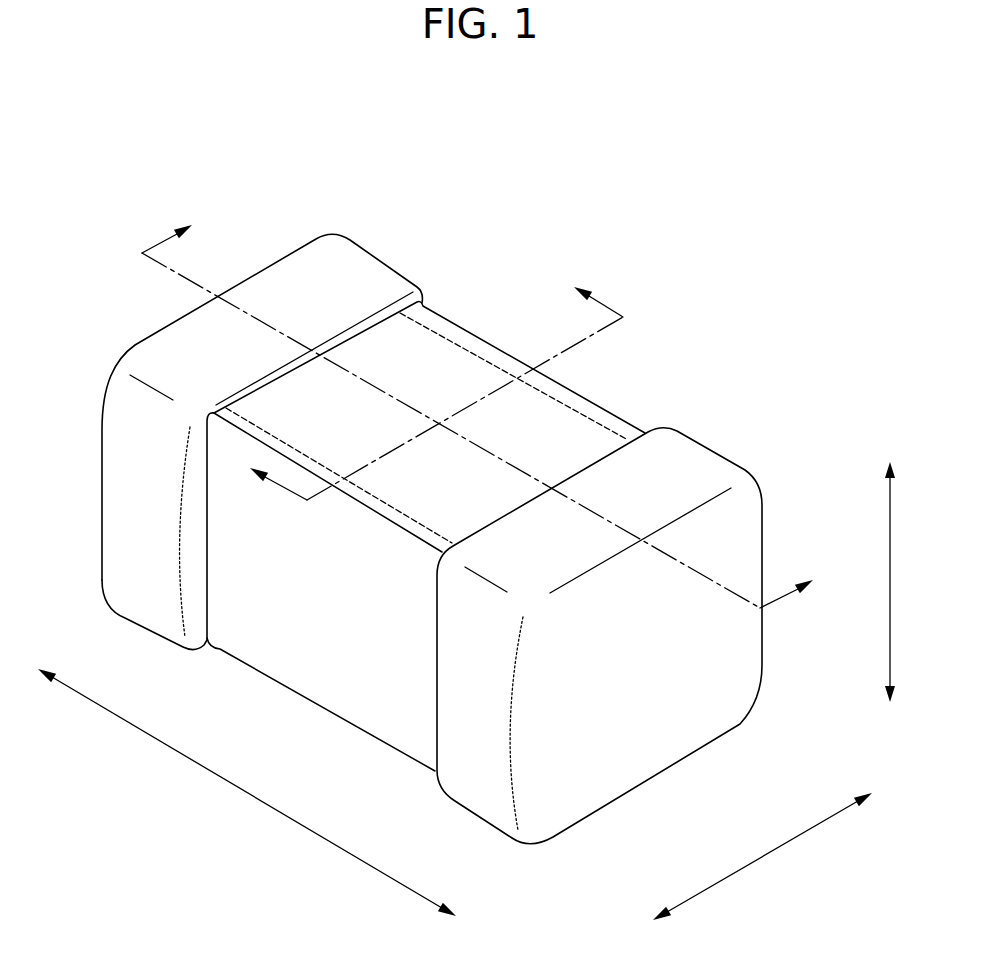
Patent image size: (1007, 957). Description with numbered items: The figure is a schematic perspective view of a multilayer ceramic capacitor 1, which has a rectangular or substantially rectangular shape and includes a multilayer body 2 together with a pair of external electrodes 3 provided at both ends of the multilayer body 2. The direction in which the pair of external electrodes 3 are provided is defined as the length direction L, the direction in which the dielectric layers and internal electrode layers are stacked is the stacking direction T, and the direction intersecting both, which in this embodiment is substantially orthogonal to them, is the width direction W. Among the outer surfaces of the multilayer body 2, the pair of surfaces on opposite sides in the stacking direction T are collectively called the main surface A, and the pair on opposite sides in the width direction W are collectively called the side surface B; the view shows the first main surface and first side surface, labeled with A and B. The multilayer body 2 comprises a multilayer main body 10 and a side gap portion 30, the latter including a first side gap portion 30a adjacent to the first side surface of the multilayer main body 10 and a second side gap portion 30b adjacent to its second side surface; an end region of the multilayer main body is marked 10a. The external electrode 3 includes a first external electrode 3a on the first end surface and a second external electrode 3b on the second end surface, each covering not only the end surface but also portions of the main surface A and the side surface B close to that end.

The multilayer ceramic capacitor 1 is at (375, 163).
The multilayer body 2 is at (547, 213).
The external electrode 3 is at (445, 502).
The first external electrode 3a is at (338, 278).
The second external electrode 3b is at (705, 464).
The multilayer main body 10 is at (433, 348).
The end surface of multilayer body 10a is at (637, 744).
The side gap portion 30 is at (82, 432).
The first side gap portion 30a is at (339, 475).
The second side gap portion 30b is at (514, 376).
The main surface A is at (491, 410).
The side surface B is at (318, 671).
The length direction L is at (247, 792).
The width direction W is at (762, 856).
The stacking direction T is at (902, 582).